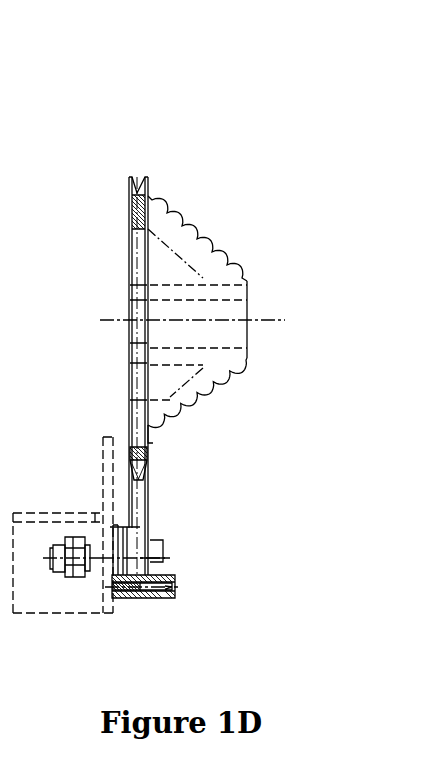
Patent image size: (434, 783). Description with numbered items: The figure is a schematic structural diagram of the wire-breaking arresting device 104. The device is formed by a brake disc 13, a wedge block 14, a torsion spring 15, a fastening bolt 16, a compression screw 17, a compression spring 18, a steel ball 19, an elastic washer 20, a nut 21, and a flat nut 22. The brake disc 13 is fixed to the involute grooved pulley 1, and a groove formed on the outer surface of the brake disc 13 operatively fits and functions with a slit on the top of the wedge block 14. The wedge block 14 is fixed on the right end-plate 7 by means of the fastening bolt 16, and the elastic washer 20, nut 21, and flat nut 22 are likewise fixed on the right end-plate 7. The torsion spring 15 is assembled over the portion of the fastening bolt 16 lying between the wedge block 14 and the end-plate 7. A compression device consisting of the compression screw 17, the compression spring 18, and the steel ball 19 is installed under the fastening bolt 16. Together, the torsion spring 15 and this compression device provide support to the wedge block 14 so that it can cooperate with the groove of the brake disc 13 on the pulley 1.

The wire-breaking arresting device 104 is at (249, 106).
The brake disc 13 is at (143, 188).
The involute grooved pulley 1 is at (217, 272).
The end-plate 7 is at (107, 510).
The wedge block 14 is at (145, 481).
The torsion spring 15 is at (127, 526).
The fastening bolt 16 is at (155, 559).
The compression screw 17 is at (177, 579).
The compression spring 18 is at (155, 599).
The steel ball 19 is at (127, 599).
The elastic washer 20 is at (91, 563).
The nut 21 is at (71, 561).
The flat nut 22 is at (59, 551).